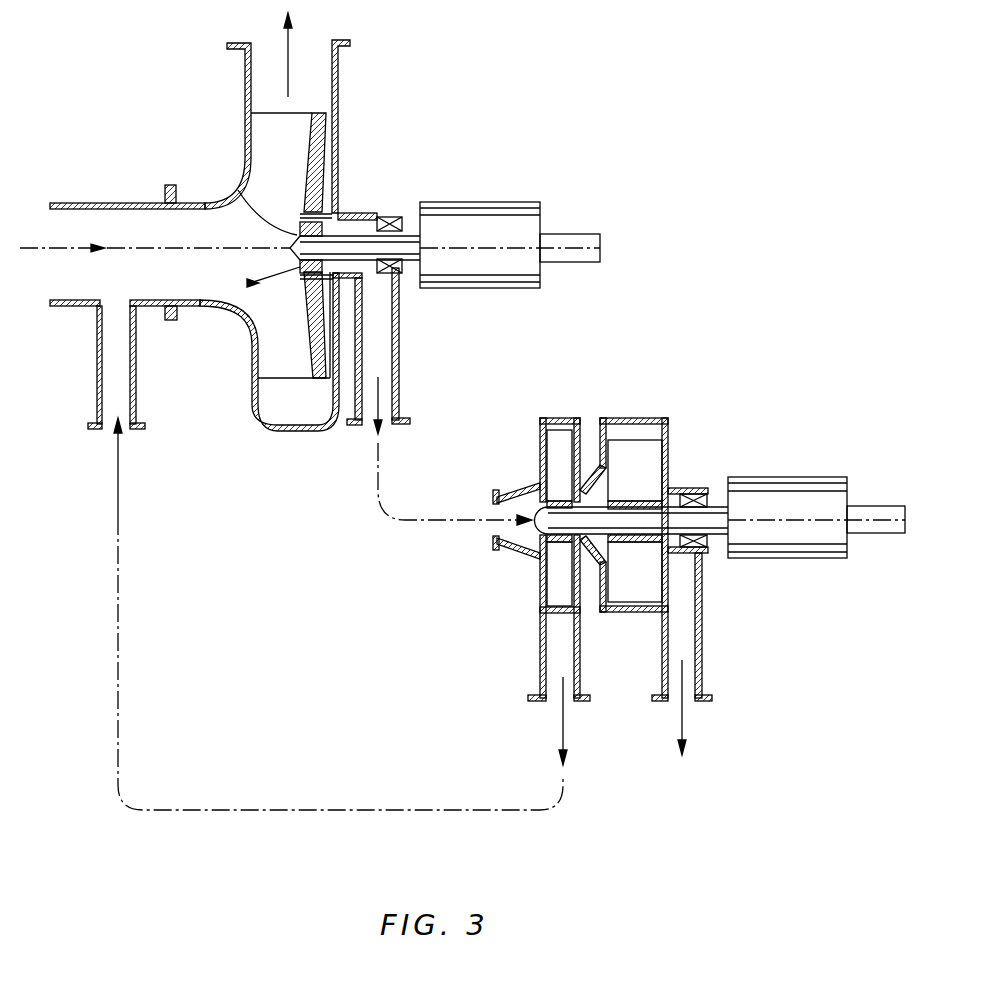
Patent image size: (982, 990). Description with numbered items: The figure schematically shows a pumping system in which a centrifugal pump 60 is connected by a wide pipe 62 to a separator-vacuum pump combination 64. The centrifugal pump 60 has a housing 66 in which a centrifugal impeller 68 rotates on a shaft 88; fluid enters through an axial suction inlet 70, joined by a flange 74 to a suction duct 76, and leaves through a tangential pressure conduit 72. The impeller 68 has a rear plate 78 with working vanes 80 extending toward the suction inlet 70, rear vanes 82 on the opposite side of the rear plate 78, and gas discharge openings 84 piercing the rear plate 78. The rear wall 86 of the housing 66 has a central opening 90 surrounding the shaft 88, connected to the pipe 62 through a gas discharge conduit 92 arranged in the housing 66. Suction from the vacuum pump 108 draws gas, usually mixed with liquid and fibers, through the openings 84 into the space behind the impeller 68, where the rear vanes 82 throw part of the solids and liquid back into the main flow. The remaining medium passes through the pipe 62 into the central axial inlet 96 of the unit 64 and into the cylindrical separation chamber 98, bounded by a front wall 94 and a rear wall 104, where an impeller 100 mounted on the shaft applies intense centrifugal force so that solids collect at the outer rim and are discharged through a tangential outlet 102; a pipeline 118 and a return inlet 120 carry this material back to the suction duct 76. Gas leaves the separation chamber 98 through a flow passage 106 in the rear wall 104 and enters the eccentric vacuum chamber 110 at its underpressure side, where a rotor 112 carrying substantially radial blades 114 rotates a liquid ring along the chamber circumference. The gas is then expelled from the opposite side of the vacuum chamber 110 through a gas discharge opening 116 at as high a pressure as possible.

The centrifugal pump 60 is at (368, 150).
The pipe 62 is at (382, 488).
The separator-vacuum pump combination 64 is at (679, 390).
The housing 66 is at (227, 187).
The centrifugal impeller 68 is at (250, 283).
The axial suction inlet 70 is at (210, 220).
The tangential pressure conduit 72 is at (310, 67).
The flange 74 is at (173, 318).
The suction duct 76 is at (50, 227).
The rear plate 78 is at (320, 137).
The working vanes 80 is at (287, 133).
The rear vanes 82 is at (323, 202).
The gas discharge openings 84 is at (333, 208).
The rear wall 86 is at (315, 177).
The shaft 88 is at (413, 240).
The central opening 90 is at (368, 225).
The gas discharge conduit 92 is at (380, 338).
The front wall 94 is at (540, 458).
The central axial inlet 96 is at (530, 553).
The separation chamber 98 is at (563, 420).
The impeller 100 is at (560, 450).
The tangential outlet 102 is at (550, 670).
The rear wall 104 is at (583, 448).
The flow passage 106 is at (587, 502).
The vacuum pump 108 is at (699, 467).
The vacuum chamber 110 is at (648, 430).
The rotor 112 is at (648, 507).
The blades 114 is at (648, 468).
The gas discharge opening 116 is at (693, 638).
The pipeline 118 is at (133, 670).
The return inlet 120 is at (123, 388).